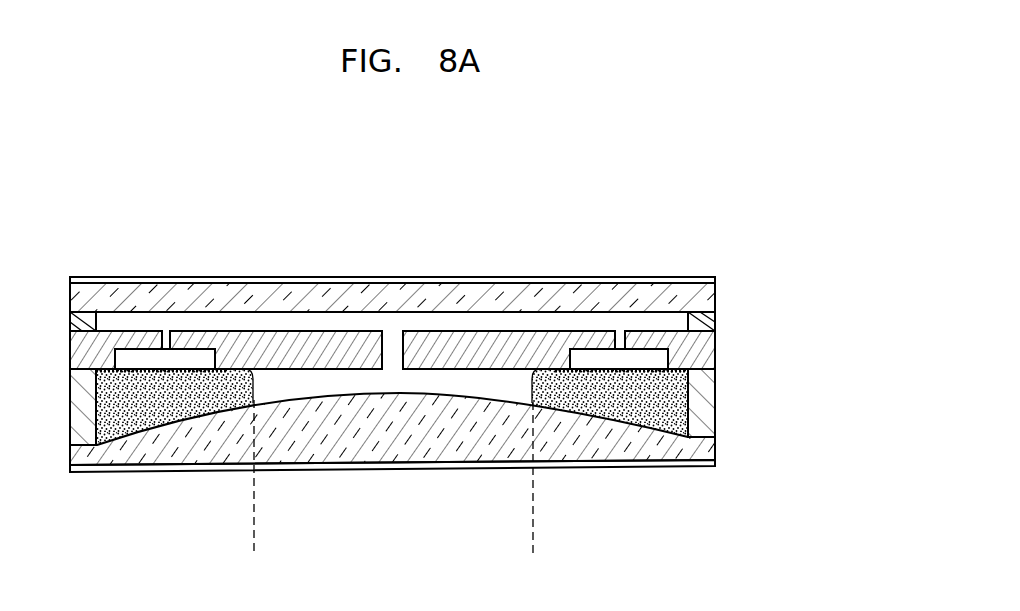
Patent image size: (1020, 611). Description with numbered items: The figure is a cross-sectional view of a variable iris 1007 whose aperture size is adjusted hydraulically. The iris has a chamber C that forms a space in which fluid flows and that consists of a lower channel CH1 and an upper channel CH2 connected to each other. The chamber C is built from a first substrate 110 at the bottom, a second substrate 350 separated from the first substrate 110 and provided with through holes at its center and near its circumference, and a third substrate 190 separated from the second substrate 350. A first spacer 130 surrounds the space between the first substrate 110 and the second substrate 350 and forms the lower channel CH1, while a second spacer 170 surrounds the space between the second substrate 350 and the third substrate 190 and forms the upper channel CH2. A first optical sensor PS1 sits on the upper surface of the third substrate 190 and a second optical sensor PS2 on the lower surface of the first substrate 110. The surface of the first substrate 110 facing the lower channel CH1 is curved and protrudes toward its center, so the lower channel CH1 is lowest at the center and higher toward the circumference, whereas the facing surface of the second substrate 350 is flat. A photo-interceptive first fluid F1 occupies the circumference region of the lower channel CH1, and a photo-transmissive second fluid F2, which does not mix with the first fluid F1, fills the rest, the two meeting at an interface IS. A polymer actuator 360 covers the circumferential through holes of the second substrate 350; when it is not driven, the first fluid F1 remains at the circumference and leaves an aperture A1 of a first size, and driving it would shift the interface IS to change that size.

The variable iris 1007 is at (683, 233).
The first optical sensor PS1 is at (695, 278).
The third substrate 190 is at (703, 296).
The second spacer 170 is at (700, 319).
The second substrate 350 is at (702, 348).
The polymer actuator 360 is at (587, 371).
The first spacer 130 is at (703, 405).
The first substrate 110 is at (706, 453).
The second optical sensor PS2 is at (693, 465).
The first fluid F1 is at (392, 419).
The second fluid F2 is at (508, 383).
The interface IS is at (533, 371).
The chamber C is at (470, 226).
The lower channel CH1 is at (442, 380).
The upper channel CH2 is at (448, 320).
The aperture A1 is at (533, 548).